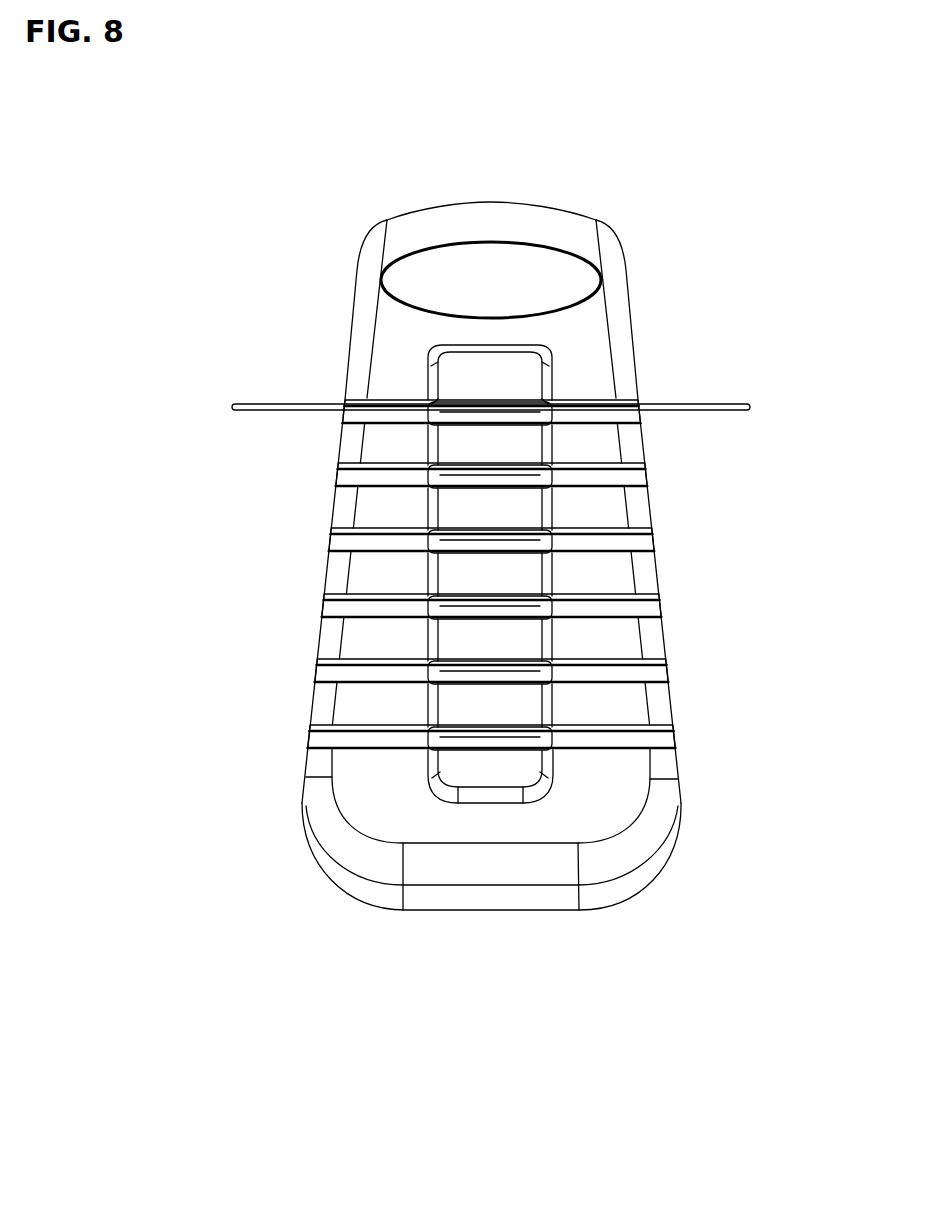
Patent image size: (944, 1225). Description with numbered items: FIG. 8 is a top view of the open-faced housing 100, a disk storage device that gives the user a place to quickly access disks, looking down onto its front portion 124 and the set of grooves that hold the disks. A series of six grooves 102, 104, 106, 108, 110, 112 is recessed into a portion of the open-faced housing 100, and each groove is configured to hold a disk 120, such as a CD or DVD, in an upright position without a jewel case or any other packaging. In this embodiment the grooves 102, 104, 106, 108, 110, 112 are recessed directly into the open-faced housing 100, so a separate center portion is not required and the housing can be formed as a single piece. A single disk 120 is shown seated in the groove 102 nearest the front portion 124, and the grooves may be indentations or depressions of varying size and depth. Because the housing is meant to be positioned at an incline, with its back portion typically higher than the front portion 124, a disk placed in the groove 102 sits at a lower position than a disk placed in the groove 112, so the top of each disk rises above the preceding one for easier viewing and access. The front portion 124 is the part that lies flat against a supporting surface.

The open-faced housing 100 is at (520, 903).
The groove 102 is at (388, 397).
The groove 104 is at (370, 478).
The groove 106 is at (345, 542).
The groove 108 is at (345, 610).
The groove 110 is at (360, 676).
The groove 112 is at (360, 742).
The disk 120 is at (250, 413).
The front portion 124 is at (470, 213).